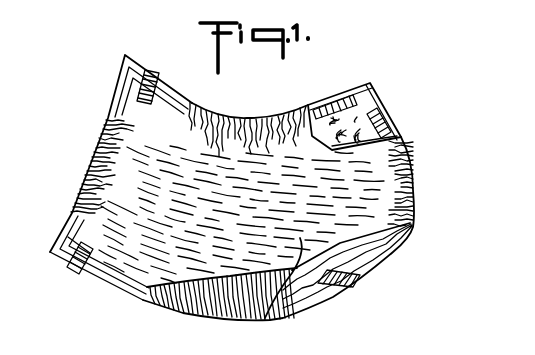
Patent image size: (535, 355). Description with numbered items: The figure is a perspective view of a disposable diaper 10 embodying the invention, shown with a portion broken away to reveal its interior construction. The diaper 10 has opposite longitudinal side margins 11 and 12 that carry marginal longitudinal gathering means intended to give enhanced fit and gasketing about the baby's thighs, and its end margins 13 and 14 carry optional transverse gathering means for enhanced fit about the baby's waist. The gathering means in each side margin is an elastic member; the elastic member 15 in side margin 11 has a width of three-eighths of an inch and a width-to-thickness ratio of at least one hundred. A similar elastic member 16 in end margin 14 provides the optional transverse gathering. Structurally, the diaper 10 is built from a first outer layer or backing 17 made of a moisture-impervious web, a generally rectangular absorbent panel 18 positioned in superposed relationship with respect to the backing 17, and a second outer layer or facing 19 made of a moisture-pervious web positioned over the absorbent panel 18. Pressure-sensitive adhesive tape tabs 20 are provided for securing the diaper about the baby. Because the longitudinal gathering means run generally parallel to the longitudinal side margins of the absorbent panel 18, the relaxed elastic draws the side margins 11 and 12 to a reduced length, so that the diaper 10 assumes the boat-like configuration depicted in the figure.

The disposable diaper 10 is at (112, 85).
The side margin 11 is at (211, 116).
The side margin 12 is at (208, 317).
The end margin 13 is at (99, 148).
The end margin 14 is at (410, 167).
The elastic member 15 is at (324, 100).
The elastic member 16 is at (389, 117).
The backing 17 is at (335, 289).
The absorbent panel 18 is at (368, 88).
The facing 19 is at (265, 318).
The pressure-sensitive adhesive tape tab 20 is at (149, 70).